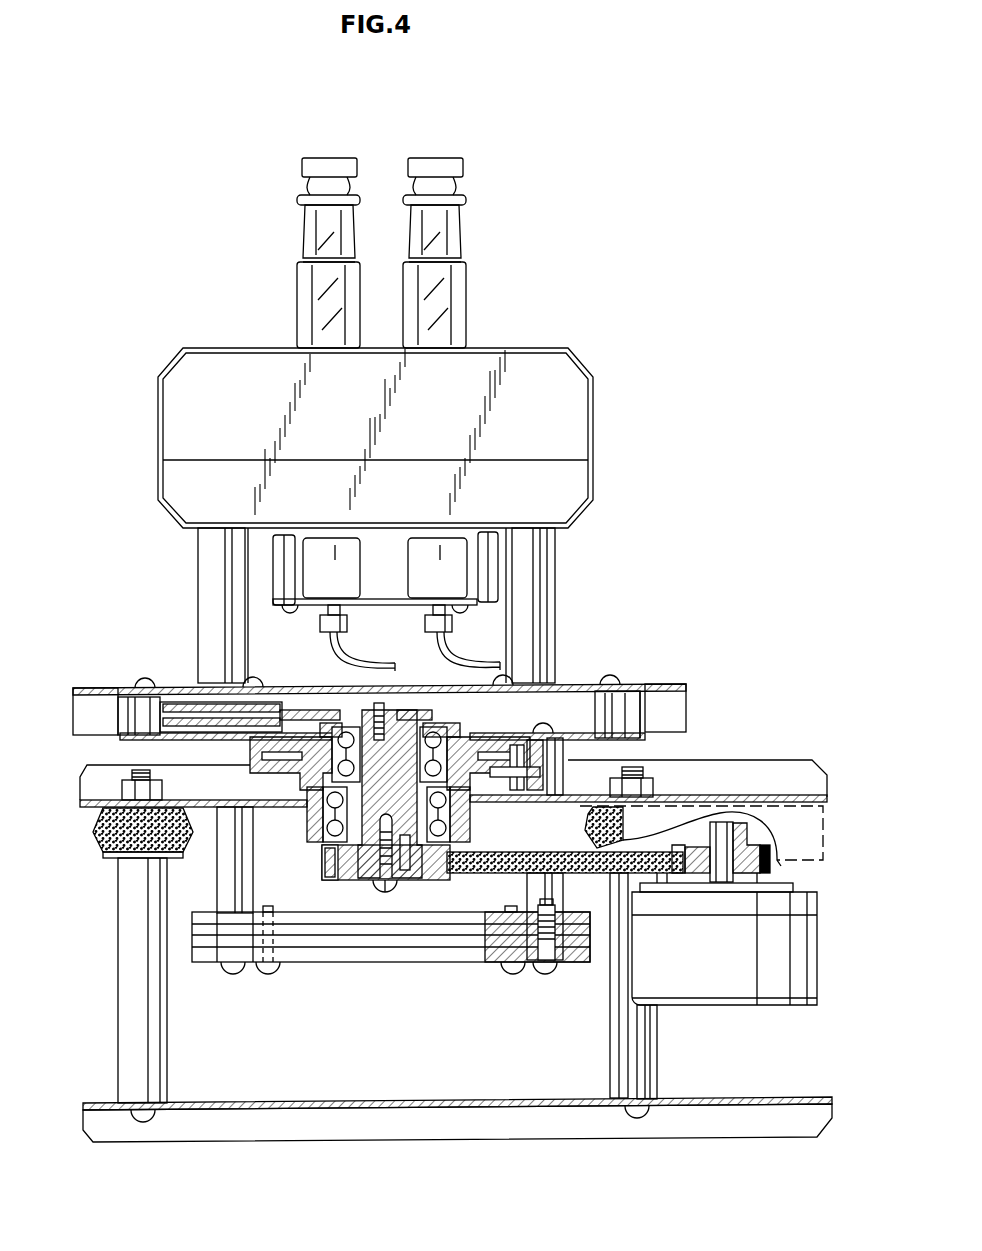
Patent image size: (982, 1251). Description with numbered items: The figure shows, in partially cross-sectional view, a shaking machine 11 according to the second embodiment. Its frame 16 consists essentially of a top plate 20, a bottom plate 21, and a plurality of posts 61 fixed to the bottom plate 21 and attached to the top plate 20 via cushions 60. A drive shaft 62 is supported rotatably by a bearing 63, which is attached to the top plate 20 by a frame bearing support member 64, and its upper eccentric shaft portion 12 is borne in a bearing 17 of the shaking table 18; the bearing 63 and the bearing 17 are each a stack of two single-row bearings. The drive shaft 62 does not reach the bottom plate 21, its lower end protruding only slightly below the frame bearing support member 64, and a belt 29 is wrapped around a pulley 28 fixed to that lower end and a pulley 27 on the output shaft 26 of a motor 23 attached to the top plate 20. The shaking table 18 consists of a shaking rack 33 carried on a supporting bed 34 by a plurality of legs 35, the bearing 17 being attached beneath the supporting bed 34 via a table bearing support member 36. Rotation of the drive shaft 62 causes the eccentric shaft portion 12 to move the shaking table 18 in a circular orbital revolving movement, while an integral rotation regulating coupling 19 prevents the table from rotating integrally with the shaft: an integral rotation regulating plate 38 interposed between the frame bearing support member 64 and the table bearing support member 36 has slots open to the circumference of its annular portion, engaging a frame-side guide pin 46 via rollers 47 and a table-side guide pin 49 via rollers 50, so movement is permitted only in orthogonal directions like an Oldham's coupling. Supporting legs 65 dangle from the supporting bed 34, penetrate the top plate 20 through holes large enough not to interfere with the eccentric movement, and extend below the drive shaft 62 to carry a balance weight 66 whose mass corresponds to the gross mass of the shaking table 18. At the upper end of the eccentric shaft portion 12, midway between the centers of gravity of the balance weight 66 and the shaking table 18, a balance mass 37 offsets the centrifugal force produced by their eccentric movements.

The shaking machine 11 is at (438, 139).
The eccentric shaft portion 12 is at (388, 710).
The frame 16 is at (808, 752).
The bearing 17 is at (343, 733).
The shaking table 18 is at (606, 430).
The integral rotation regulating coupling 19 is at (540, 765).
The top plate 20 is at (773, 760).
The bottom plate 21 is at (740, 1100).
The motor 23 is at (805, 968).
The output shaft 26 is at (722, 828).
The pulley 27 is at (778, 836).
The pulley 28 is at (345, 880).
The belt 29 is at (472, 940).
The shaking rack 33 is at (175, 423).
The supporting bed 34 is at (100, 685).
The legs 35 is at (205, 570).
The table bearing support member 36 is at (478, 698).
The balance mass 37 is at (185, 705).
The integral rotation regulating plate 38 is at (288, 735).
The guide pin 46 is at (268, 790).
The rollers 47 is at (300, 798).
The guide pin 49 is at (545, 740).
The rollers 50 is at (485, 760).
The cushions 60 is at (95, 848).
The posts 61 is at (130, 1000).
The drive shaft 62 is at (430, 940).
The bearing 63 is at (310, 840).
The frame bearing support member 64 is at (527, 790).
The supporting legs 65 is at (222, 865).
The balance weight 66 is at (390, 950).